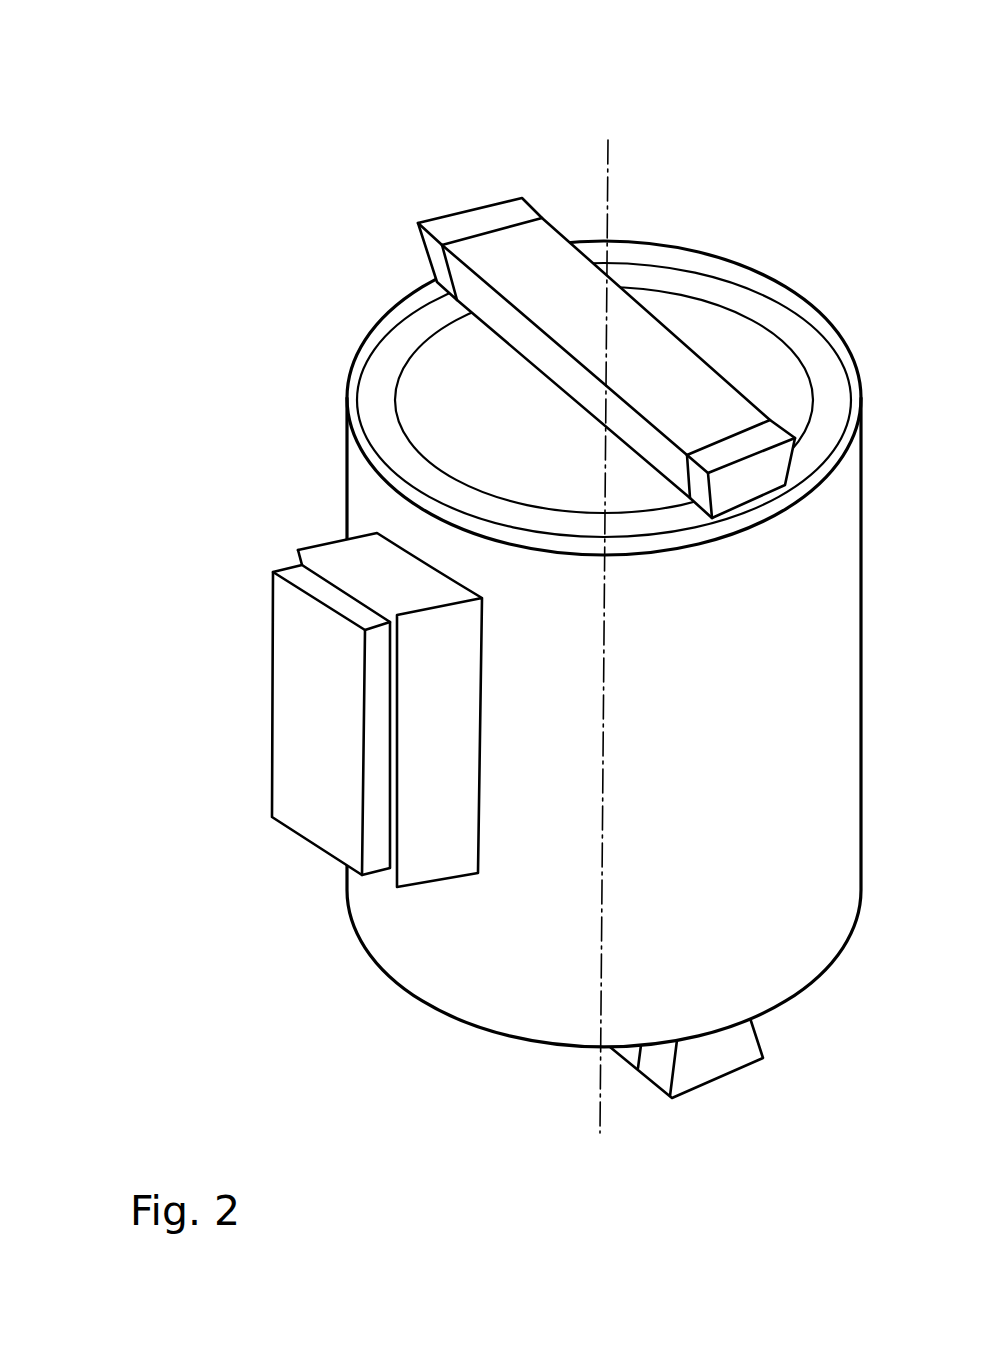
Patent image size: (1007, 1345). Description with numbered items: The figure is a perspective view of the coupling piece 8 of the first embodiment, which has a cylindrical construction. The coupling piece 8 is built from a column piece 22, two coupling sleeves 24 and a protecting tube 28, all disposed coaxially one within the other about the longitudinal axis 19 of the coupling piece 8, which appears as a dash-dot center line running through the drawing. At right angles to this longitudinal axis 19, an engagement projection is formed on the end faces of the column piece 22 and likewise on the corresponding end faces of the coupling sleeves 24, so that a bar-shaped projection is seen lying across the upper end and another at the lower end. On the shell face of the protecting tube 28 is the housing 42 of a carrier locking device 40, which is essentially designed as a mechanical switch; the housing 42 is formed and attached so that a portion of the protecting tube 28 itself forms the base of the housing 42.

The coupling piece 8 is at (627, 223).
The longitudinal axis 19 is at (607, 215).
The column piece 22 is at (420, 373).
The coupling sleeves 24 is at (373, 412).
The protecting tube 28 is at (553, 978).
The carrier locking device 40 is at (296, 700).
The housing 42 is at (432, 818).